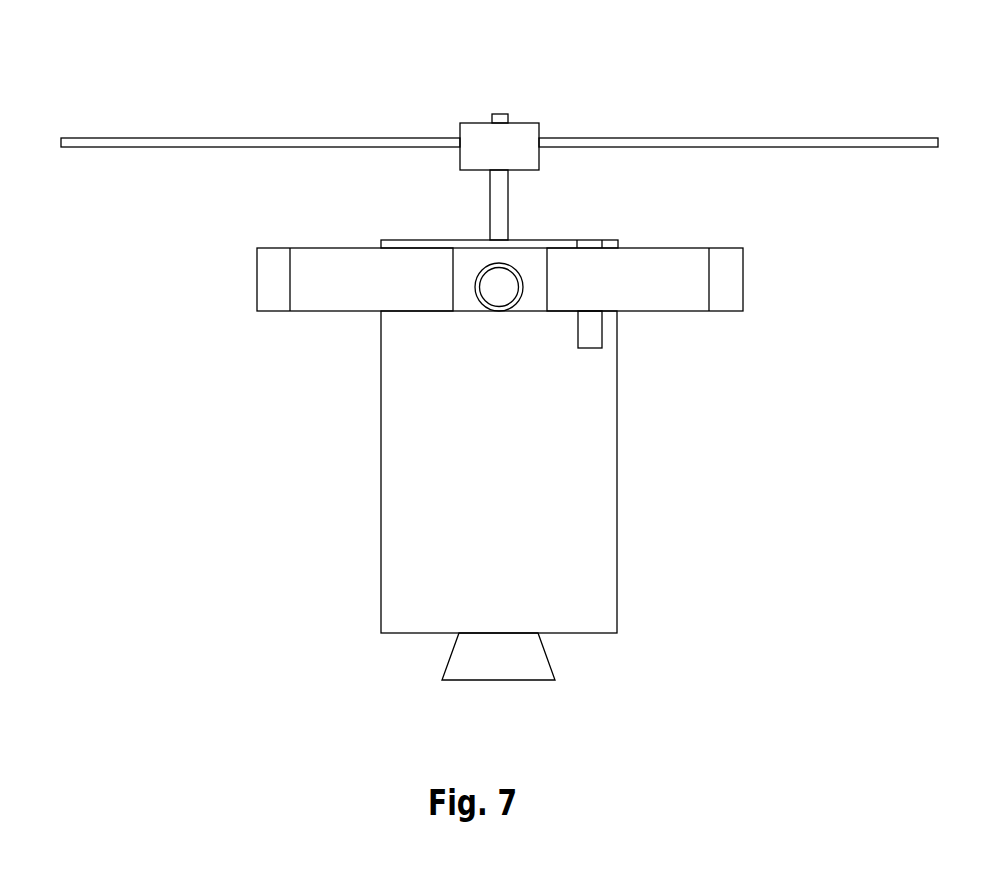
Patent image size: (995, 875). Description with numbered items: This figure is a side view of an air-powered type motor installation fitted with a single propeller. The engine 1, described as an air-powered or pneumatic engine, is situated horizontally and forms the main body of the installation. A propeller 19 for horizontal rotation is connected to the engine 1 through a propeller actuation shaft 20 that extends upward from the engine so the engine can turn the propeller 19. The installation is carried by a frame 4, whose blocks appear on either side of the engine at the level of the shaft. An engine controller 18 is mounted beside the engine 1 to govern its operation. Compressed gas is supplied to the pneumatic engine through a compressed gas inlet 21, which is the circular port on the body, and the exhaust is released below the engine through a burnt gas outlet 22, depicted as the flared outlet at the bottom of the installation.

The propeller 19 is at (499, 81).
The propeller actuation shaft 20 is at (674, 198).
The frame 4 is at (550, 337).
The engine controller 18 is at (718, 395).
The compressed gas inlet 21 is at (667, 401).
The engine 1 is at (613, 480).
The burnt gas outlet 22 is at (652, 685).